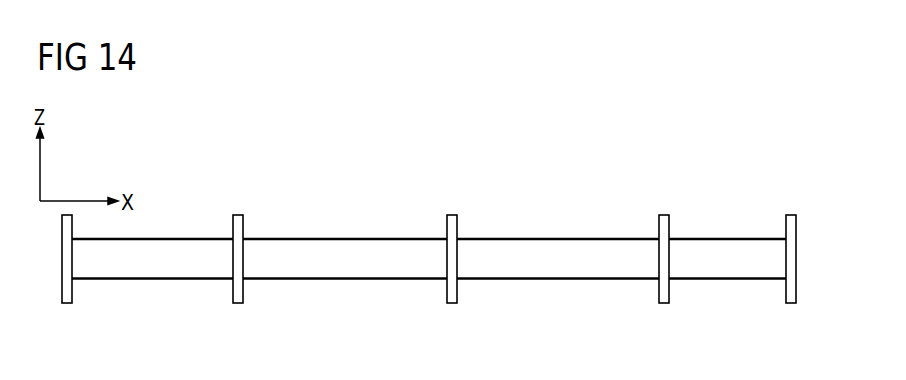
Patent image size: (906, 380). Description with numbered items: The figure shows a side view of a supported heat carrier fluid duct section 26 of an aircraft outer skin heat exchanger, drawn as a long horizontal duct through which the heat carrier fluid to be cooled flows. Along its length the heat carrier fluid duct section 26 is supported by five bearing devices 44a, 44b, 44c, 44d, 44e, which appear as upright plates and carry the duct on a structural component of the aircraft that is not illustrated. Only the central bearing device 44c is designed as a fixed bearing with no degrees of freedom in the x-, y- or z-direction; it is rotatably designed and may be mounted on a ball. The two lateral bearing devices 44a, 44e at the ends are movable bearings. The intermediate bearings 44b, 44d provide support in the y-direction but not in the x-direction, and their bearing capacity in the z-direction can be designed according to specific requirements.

The first heat carrier fluid duct section 26 is at (372, 249).
The lateral bearing device 44a is at (68, 302).
The intermediate bearing 44b is at (237, 216).
The central bearing device 44c is at (453, 302).
The intermediate bearing 44d is at (664, 216).
The lateral bearing device 44e is at (792, 302).